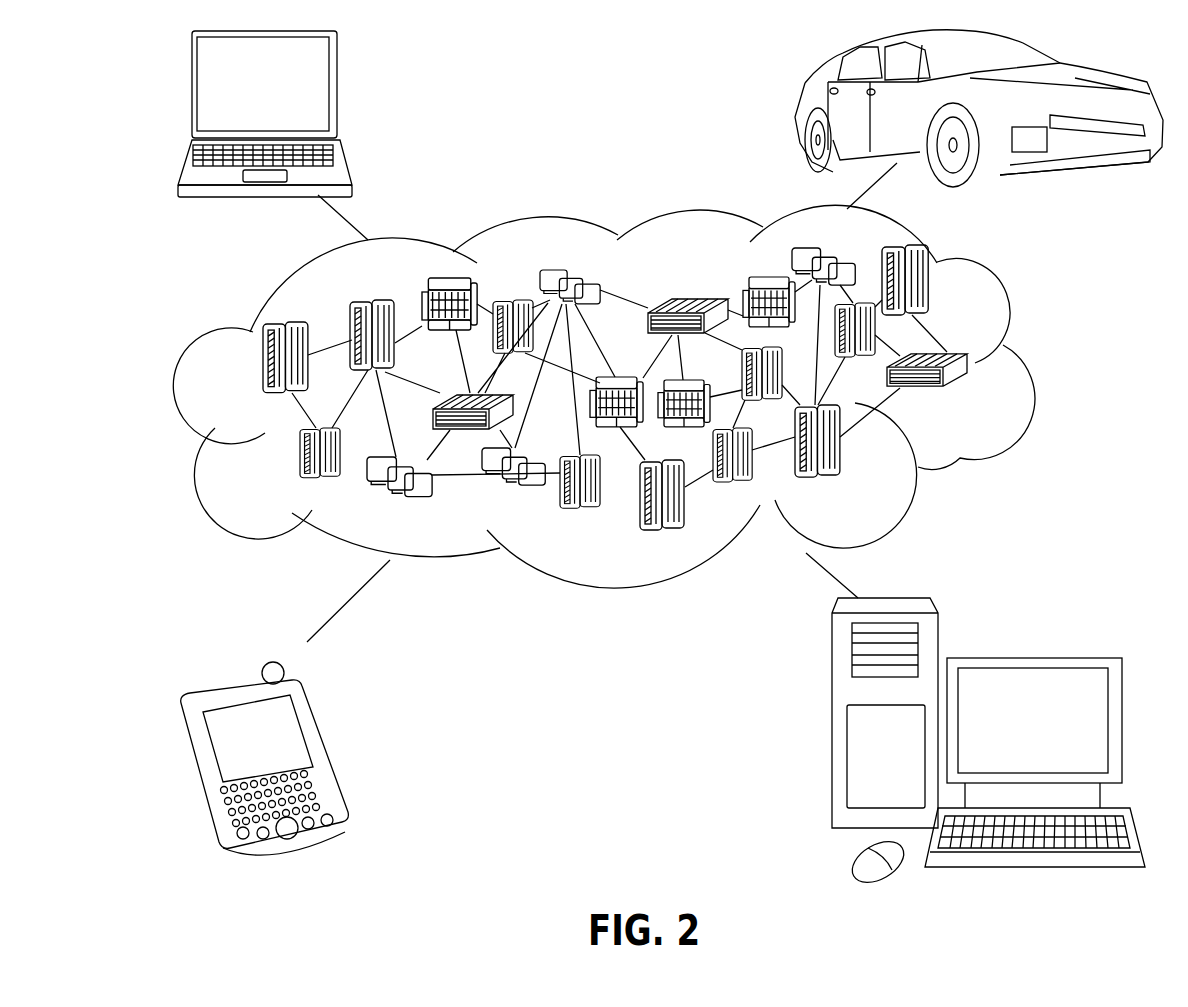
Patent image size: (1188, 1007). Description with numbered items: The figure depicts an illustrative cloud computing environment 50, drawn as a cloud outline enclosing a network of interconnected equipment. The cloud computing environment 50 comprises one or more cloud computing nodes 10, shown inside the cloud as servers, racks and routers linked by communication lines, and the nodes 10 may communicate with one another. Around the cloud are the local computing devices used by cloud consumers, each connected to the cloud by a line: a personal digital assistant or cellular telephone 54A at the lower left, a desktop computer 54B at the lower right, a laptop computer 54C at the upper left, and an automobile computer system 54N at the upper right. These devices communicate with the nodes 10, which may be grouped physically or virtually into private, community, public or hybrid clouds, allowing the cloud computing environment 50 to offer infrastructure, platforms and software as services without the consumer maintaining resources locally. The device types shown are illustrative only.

The cloud computing nodes 10 is at (633, 396).
The cloud computing environment 50 is at (1033, 365).
The personal digital assistant (PDA) or cellular telephone 54A is at (330, 750).
The desktop computer 54B is at (1033, 655).
The laptop computer 54C is at (338, 92).
The automobile computer system 54N is at (800, 110).